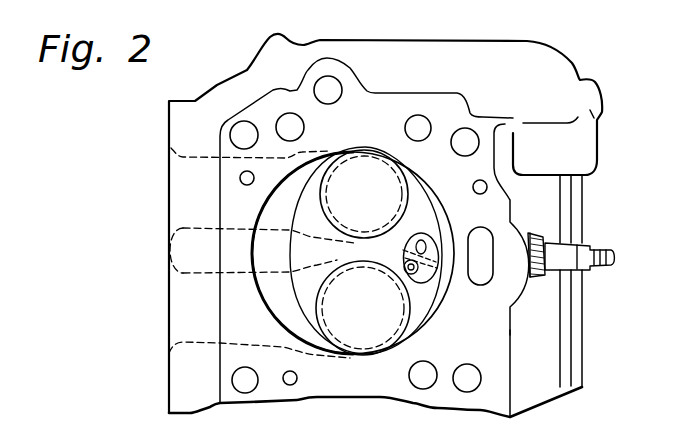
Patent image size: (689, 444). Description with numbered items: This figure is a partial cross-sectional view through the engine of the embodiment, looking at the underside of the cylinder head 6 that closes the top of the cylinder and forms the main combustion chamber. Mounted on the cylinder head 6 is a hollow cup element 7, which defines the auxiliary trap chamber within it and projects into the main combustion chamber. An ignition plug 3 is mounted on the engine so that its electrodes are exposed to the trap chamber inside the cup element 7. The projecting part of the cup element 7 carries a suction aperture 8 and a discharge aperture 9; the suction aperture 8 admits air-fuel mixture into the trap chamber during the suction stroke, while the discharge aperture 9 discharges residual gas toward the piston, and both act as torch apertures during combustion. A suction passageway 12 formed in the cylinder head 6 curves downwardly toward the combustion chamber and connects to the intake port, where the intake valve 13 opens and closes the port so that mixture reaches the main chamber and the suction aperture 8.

The ignition plug 3 is at (573, 250).
The cylinder head 6 is at (500, 330).
The cup element 7 is at (425, 282).
The suction aperture 8 is at (405, 272).
The discharge aperture 9 is at (421, 241).
The suction passageway 12 is at (203, 345).
The intake valve 13 is at (370, 348).